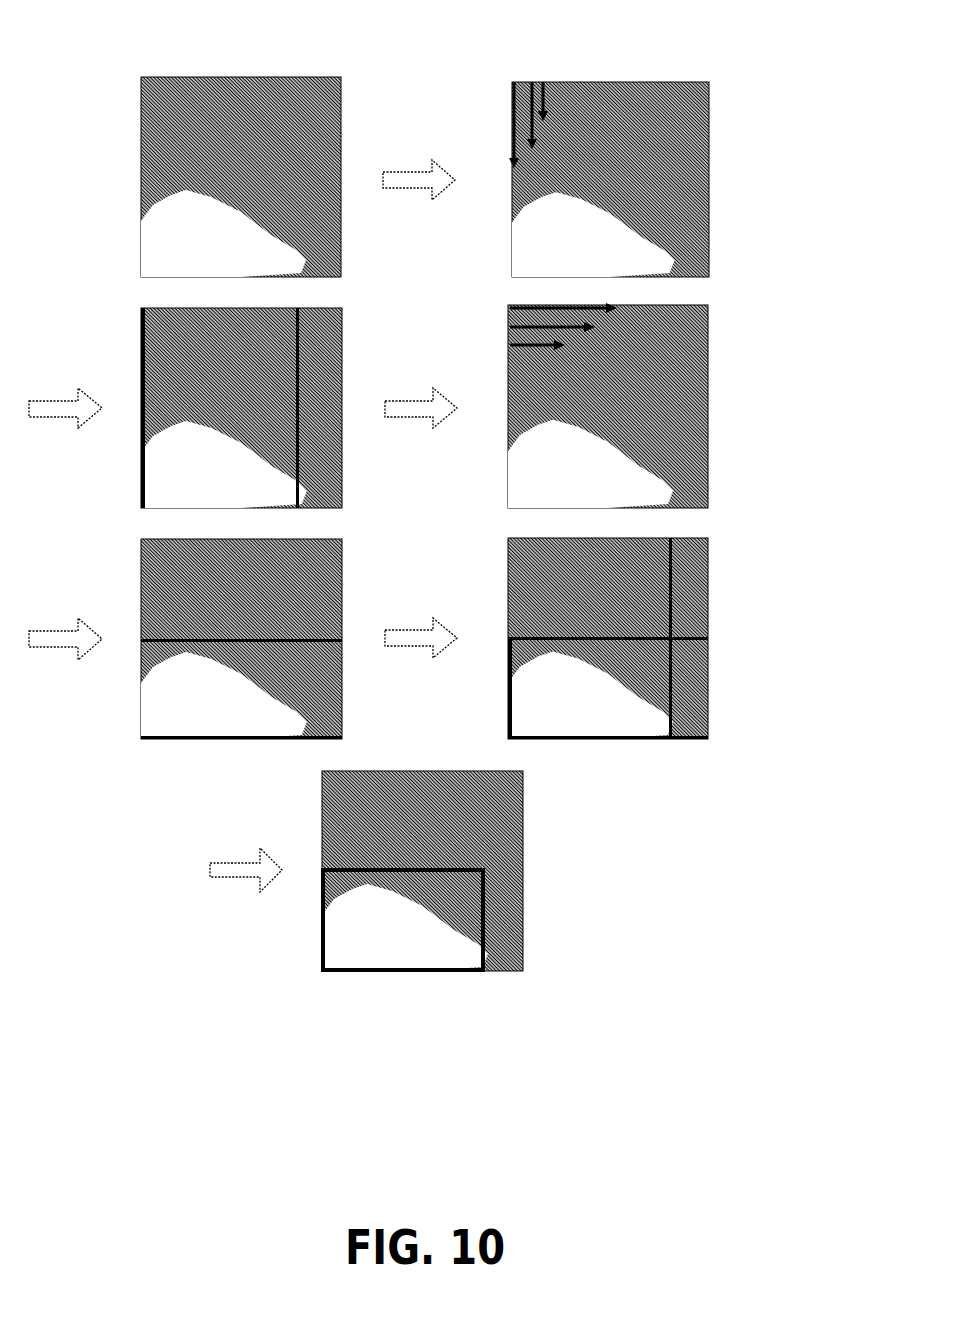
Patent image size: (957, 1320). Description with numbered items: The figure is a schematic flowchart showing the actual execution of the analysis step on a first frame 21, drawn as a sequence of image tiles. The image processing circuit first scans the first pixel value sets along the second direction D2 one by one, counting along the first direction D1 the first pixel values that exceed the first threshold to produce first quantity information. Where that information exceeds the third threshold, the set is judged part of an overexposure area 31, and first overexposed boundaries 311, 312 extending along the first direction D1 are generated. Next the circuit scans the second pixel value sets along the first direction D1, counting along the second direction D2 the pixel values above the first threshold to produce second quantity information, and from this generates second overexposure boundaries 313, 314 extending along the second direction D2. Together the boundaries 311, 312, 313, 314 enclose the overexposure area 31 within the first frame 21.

The first frame 21 is at (240, 77).
The first direction D1 is at (573, 83).
The second direction D2 is at (508, 310).
The first overexposed boundary 311 is at (141, 327).
The first overexposed boundary 312 is at (297, 352).
The second overexposure boundary 313 is at (297, 640).
The second overexposure boundary 314 is at (678, 726).
The overexposure area 31 is at (483, 915).